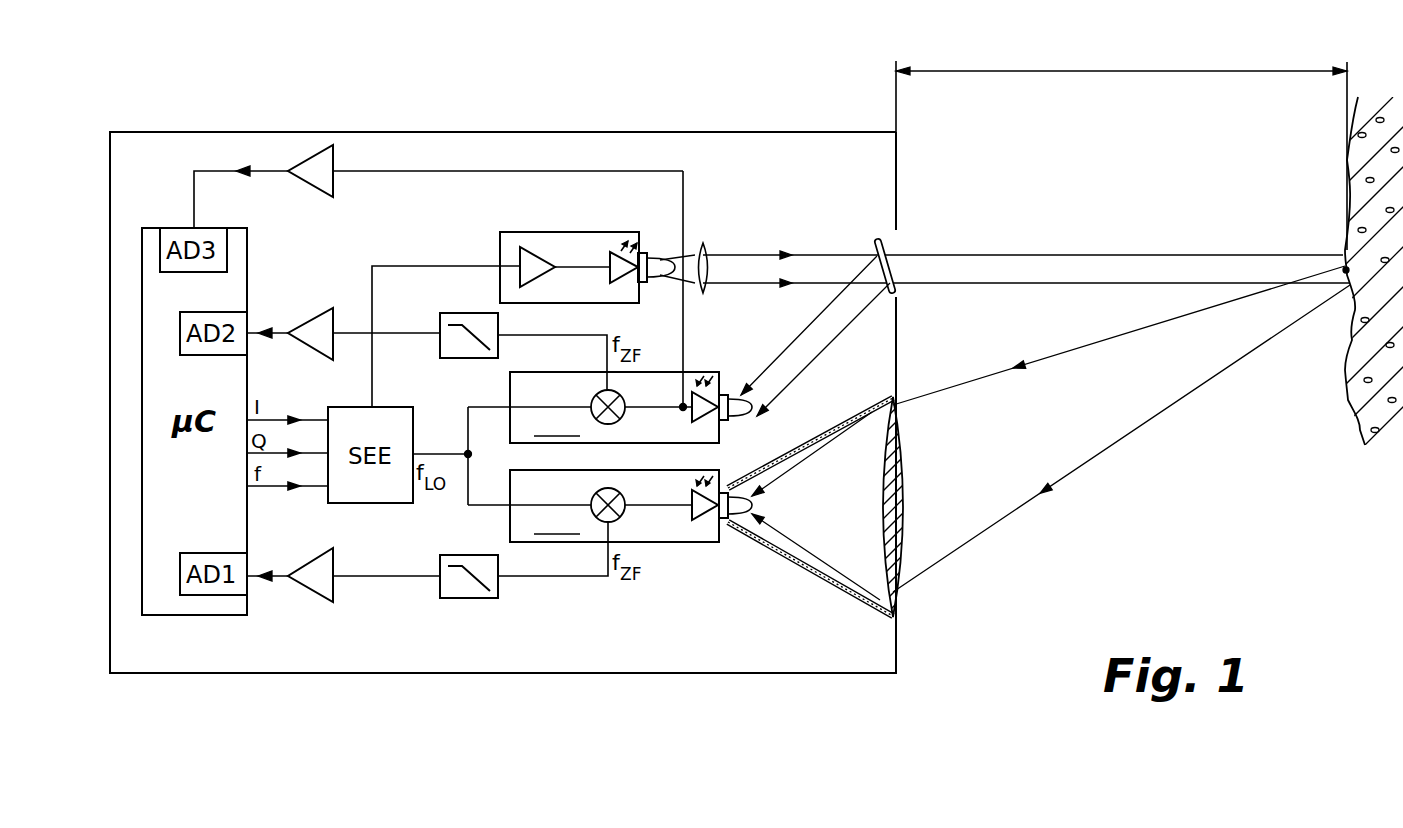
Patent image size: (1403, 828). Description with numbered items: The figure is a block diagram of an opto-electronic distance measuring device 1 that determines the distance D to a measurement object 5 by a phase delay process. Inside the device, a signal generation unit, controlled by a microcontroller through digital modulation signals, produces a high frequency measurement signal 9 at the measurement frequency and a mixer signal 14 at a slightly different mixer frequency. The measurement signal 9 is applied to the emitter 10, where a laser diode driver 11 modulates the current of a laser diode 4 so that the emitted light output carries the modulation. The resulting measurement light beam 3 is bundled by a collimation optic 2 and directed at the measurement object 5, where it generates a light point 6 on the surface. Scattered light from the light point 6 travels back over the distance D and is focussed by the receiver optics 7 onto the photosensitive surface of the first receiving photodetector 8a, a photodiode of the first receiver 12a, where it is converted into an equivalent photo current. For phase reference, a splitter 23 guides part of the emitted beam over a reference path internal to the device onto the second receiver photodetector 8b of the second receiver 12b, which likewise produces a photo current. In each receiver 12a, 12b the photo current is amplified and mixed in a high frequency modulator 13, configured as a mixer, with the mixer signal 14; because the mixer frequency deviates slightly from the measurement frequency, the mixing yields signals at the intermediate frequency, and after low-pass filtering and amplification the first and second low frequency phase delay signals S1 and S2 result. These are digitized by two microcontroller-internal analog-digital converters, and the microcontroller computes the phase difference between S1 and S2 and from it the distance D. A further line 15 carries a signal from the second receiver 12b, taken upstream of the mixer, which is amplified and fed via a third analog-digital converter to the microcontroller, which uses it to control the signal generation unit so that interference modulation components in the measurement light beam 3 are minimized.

The opto-electronic distance measuring device 1 is at (568, 661).
The collimation optic 2 is at (703, 243).
The measurement light beam 3 is at (1023, 255).
The laser diode 4 is at (611, 256).
The measurement object 5 is at (1393, 322).
The light point 6 is at (1338, 262).
The receiver optics 7 is at (895, 545).
The first receiving photodetector 8a is at (700, 522).
The second receiver photodetector 8b is at (714, 392).
The high frequency measurement signal 9 is at (393, 266).
The emitter 10 is at (568, 243).
The laser diode driver 11 is at (530, 250).
The first receiver 12a is at (610, 534).
The second receiver 12b is at (610, 386).
The high frequency modulator 13 is at (595, 394).
The mixer signal 14 is at (438, 454).
The feedback line to AD3 15 is at (425, 172).
The splitter 23 is at (876, 240).
The distance D is at (1118, 71).
The first low frequency phase delay signal S1 is at (278, 578).
The second low frequency phase delay signal S2 is at (277, 332).